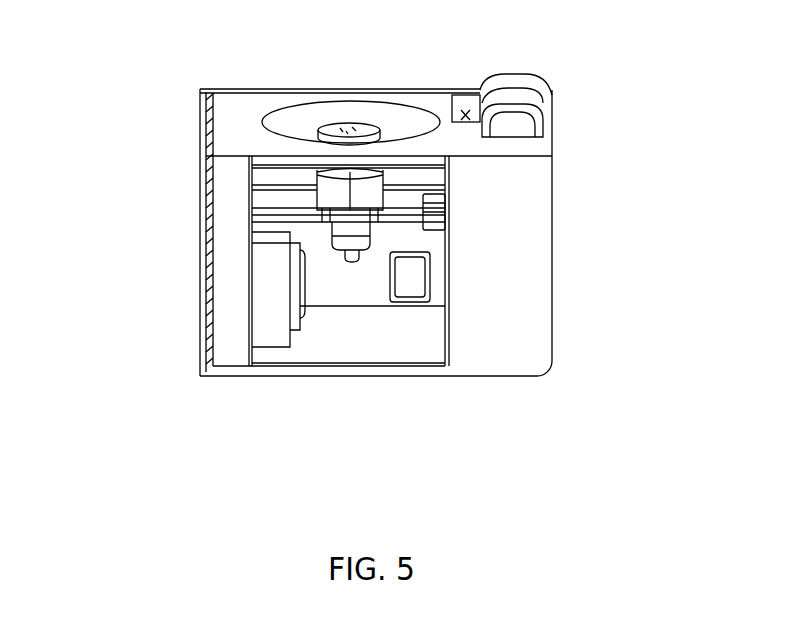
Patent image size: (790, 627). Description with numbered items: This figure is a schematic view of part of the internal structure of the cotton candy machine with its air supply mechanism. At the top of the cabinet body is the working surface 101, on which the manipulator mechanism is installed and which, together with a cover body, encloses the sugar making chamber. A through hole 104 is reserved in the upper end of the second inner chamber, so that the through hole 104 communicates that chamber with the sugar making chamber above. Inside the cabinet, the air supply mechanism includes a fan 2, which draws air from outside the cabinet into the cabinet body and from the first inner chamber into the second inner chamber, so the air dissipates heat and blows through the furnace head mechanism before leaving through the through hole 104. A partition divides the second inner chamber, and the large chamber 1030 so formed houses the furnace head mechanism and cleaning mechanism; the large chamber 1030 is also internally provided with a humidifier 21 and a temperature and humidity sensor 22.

The working surface 101 is at (225, 112).
The through hole 104 is at (316, 113).
The fan 2 is at (272, 302).
The humidifier 21 is at (413, 275).
The temperature and humidity sensor 22 is at (428, 224).
The large chamber 1030 is at (362, 340).